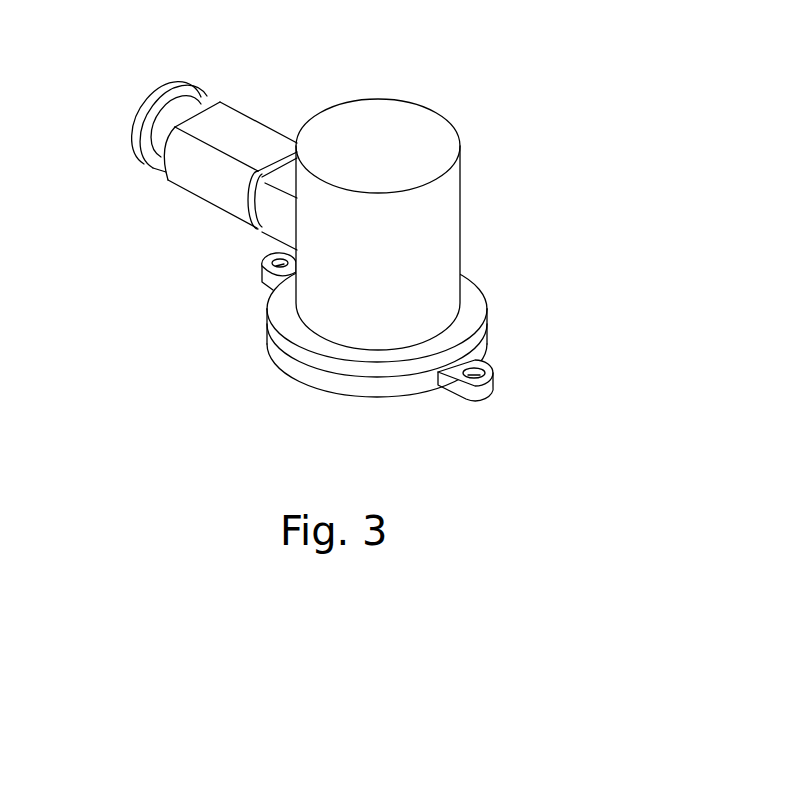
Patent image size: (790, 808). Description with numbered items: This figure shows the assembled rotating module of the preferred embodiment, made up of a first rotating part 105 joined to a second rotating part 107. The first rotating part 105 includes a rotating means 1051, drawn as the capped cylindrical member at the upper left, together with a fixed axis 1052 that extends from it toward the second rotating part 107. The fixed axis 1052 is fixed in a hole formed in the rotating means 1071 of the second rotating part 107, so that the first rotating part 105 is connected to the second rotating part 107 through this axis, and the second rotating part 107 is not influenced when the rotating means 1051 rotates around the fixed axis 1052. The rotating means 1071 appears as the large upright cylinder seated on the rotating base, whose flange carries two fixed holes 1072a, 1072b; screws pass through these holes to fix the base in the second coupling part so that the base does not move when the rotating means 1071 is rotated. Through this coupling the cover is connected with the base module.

The first rotating part 105 is at (169, 204).
The rotating means 1051 is at (185, 167).
The fixed axis 1052 is at (232, 224).
The second rotating part 107 is at (448, 207).
The rotating means 1071 is at (487, 332).
The fixed hole 1072a is at (264, 274).
The fixed hole 1072b is at (485, 374).